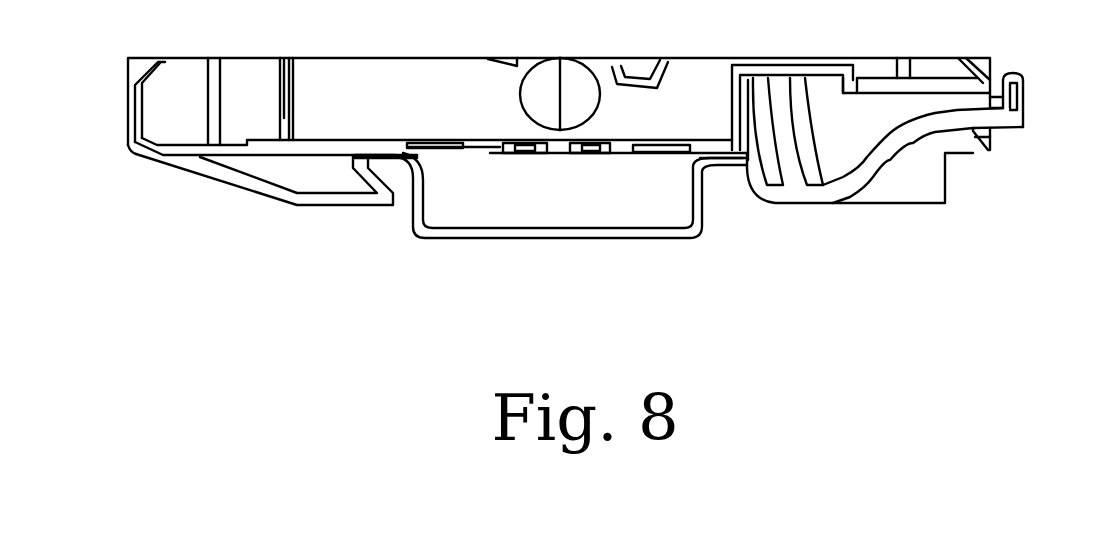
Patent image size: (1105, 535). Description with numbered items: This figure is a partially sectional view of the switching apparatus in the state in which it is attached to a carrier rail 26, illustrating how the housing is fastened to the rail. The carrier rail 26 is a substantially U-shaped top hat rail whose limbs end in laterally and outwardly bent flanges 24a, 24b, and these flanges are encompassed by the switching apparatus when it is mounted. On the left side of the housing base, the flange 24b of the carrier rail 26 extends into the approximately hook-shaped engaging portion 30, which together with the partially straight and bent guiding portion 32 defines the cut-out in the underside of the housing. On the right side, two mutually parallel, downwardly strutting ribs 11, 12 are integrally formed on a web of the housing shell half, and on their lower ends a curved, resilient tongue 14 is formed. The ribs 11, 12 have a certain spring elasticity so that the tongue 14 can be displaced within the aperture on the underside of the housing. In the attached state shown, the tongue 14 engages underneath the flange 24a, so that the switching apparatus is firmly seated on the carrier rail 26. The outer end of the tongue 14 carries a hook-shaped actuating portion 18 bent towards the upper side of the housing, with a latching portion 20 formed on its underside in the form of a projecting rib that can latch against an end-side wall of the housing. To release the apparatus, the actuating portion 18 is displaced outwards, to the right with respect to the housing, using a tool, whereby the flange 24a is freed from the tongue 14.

The rib 11 is at (773, 157).
The rib 12 is at (817, 147).
The tongue 14 is at (875, 170).
The actuating portion 18 is at (1016, 100).
The latching portion 20 is at (988, 148).
The flange 24a is at (725, 167).
The flange 24b is at (403, 162).
The carrier rail 26 is at (603, 238).
The engaging portion 30 is at (365, 197).
The guiding portion 32 is at (790, 205).